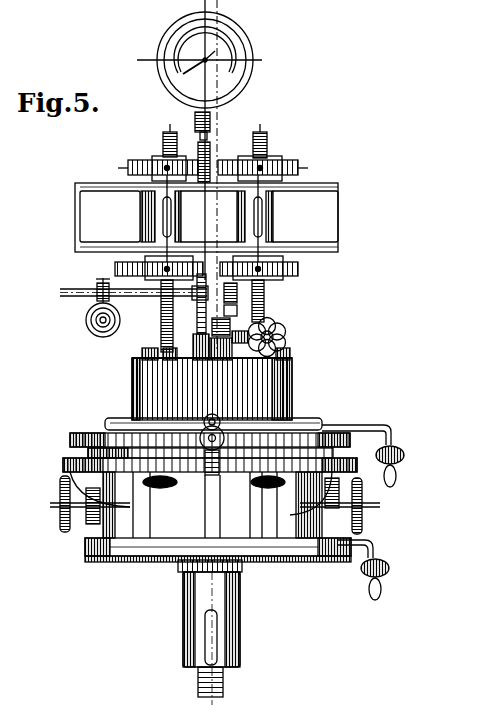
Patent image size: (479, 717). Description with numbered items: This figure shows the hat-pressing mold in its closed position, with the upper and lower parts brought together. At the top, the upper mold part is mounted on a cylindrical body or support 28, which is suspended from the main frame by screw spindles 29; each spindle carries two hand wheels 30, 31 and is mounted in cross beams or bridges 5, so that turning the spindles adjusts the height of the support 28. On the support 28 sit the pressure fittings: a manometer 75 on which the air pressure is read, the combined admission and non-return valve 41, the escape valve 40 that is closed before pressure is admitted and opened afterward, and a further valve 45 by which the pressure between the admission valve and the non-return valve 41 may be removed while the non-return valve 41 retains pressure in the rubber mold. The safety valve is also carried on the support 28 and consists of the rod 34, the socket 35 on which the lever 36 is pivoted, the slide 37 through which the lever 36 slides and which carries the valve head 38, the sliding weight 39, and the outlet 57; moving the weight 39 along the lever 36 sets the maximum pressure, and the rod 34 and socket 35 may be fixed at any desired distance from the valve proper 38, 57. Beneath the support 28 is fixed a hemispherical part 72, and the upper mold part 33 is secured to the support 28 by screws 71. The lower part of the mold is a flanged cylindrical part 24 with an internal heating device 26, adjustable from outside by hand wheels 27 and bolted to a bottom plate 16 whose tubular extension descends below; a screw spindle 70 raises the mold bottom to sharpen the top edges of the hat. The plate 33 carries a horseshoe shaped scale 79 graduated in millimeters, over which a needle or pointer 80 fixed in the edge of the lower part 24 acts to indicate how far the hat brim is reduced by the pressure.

The cross beams or bridges 5 is at (338, 220).
The bottom plate 16 is at (330, 551).
The cylindrical part 24 is at (352, 467).
The internal heating device 26 is at (366, 572).
The hand wheels 27 is at (362, 499).
The cylindrical body or support 28 is at (292, 368).
The screw spindles 29 is at (262, 136).
The hand wheel 30 is at (298, 269).
The hand wheel 31 is at (297, 166).
The upper mold part 33 is at (350, 440).
The rod 34 is at (232, 339).
The socket 35 is at (239, 295).
The lever 36 is at (122, 297).
The slide 37 is at (197, 300).
The valve head 38 is at (193, 332).
The sliding weight 39 is at (86, 316).
The escape valve 40 is at (288, 340).
The non-return valve 41 is at (239, 316).
The valve 45 is at (396, 440).
The outlet 57 is at (197, 363).
The screw spindle 70 is at (222, 680).
The screws 71 is at (148, 352).
The hemispherical part 72 is at (88, 452).
The manometer 75 is at (226, 95).
The horseshoe shaped scale 79 is at (292, 418).
The needle or pointer 80 is at (213, 467).